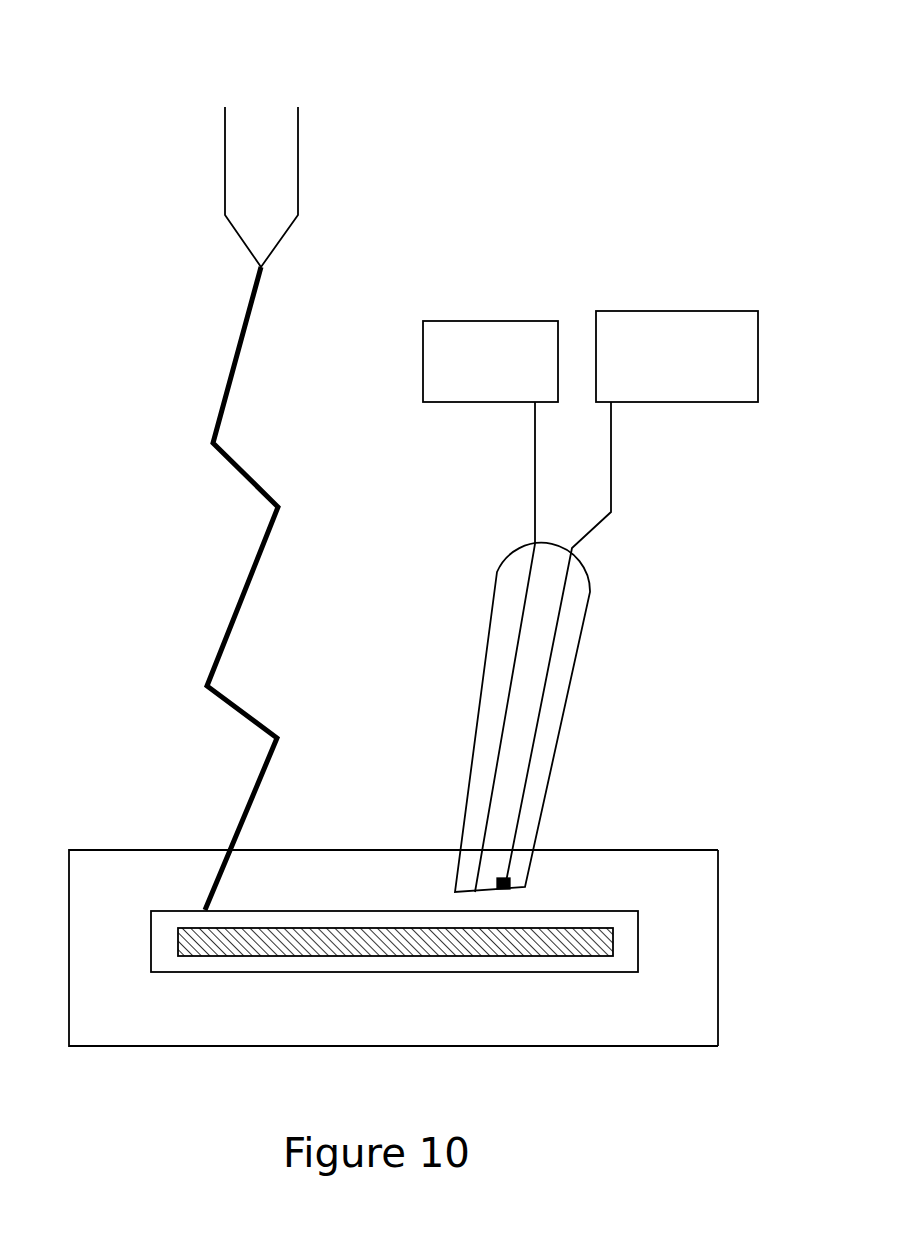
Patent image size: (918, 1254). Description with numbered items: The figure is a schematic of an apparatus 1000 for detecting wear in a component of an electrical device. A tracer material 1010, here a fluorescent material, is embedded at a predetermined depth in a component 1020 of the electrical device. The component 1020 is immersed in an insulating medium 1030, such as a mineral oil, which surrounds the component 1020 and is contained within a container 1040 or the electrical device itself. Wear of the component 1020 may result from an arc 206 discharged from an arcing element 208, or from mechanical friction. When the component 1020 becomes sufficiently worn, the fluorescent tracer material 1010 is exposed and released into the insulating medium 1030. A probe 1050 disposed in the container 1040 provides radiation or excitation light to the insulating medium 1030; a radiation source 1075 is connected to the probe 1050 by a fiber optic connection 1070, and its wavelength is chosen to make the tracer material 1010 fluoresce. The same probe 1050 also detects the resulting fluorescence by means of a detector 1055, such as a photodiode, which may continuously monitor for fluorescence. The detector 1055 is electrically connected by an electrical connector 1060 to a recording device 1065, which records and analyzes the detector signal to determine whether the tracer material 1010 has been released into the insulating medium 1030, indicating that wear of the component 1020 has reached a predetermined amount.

The apparatus 1000 is at (446, 95).
The arcing element 208 is at (225, 157).
The arc 206 is at (220, 405).
The radiation source 1075 is at (450, 321).
The recording device 1065 is at (648, 311).
The fiber optic connection 1070 is at (512, 675).
The electrical connector 1060 is at (560, 620).
The probe 1050 is at (565, 713).
The detector 1055 is at (512, 885).
The insulating medium 1030 is at (665, 880).
The container 1040 is at (719, 893).
The component 1020 is at (638, 972).
The tracer material 1010 is at (613, 939).